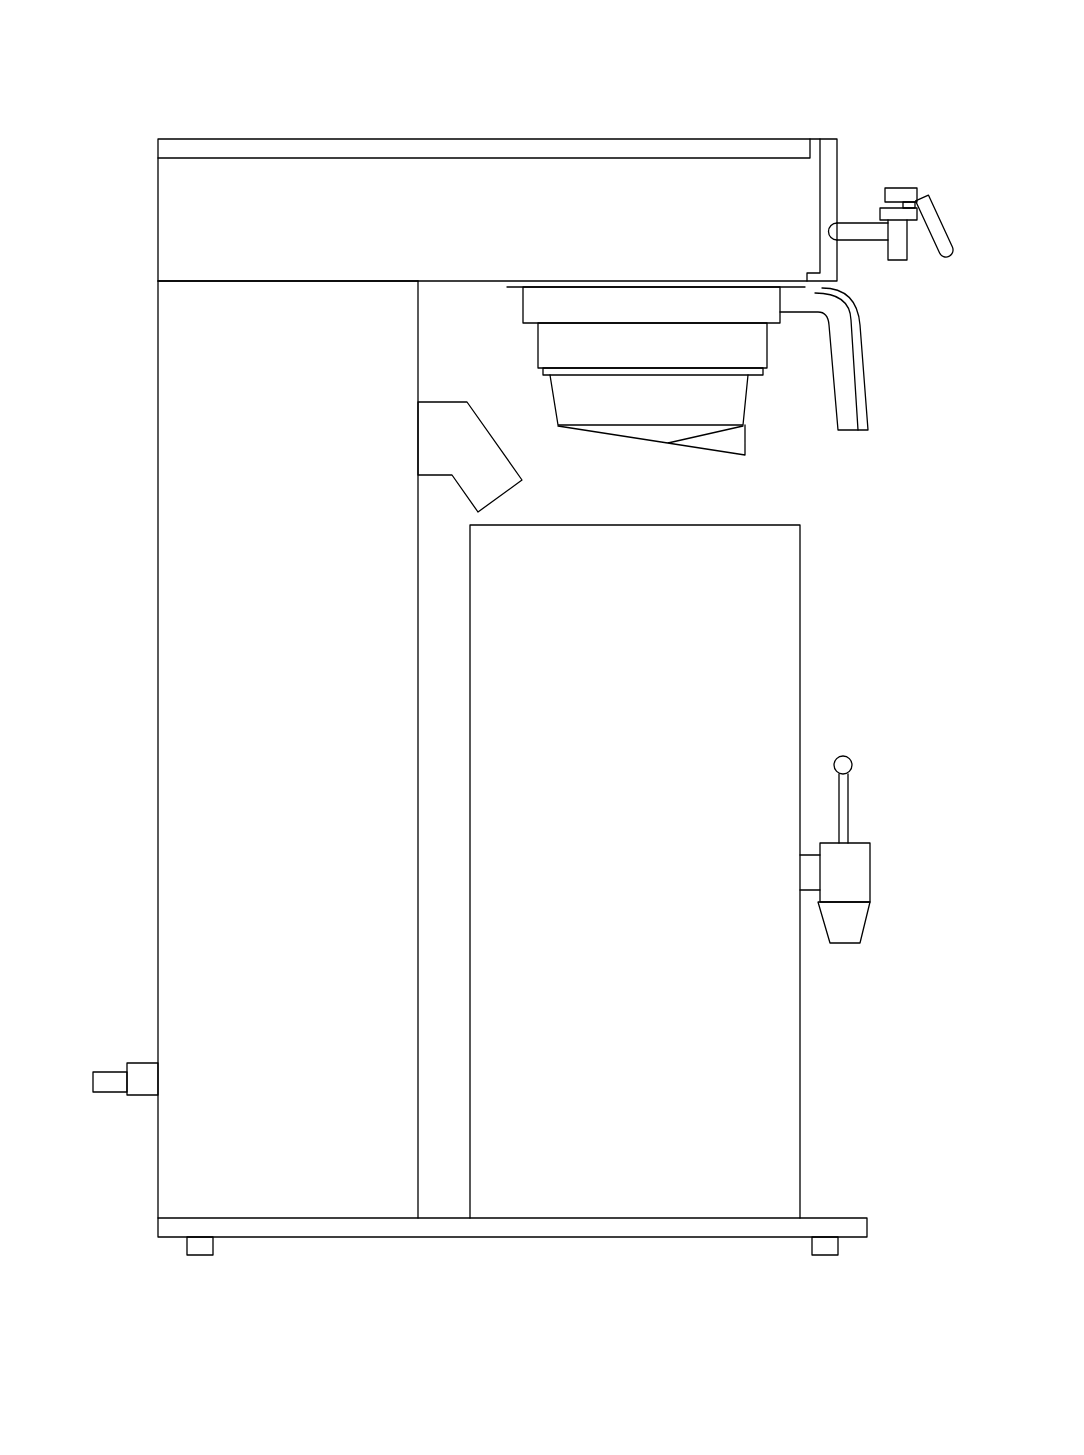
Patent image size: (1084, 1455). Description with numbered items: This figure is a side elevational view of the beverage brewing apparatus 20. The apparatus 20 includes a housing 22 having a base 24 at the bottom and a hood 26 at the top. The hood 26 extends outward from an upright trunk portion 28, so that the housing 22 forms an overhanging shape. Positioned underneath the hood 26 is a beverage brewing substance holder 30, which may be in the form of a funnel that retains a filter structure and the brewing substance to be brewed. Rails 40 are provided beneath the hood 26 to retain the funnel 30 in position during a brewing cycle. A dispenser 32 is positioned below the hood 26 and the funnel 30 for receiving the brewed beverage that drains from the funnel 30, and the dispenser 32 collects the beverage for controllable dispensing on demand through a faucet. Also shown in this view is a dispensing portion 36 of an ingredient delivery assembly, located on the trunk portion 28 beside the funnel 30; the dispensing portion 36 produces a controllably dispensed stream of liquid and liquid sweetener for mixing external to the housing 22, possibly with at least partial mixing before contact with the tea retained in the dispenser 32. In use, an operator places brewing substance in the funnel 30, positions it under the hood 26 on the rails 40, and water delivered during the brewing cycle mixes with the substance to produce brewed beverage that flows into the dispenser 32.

The beverage brewing apparatus 20 is at (122, 99).
The housing 22 is at (110, 513).
The base 24 is at (340, 1257).
The hood 26 is at (788, 187).
The trunk portion 28 is at (210, 610).
The beverage brewing substance holder 30 is at (766, 427).
The dispenser 32 is at (770, 1015).
The dispensing portion 36 is at (497, 440).
The rails 40 is at (567, 288).